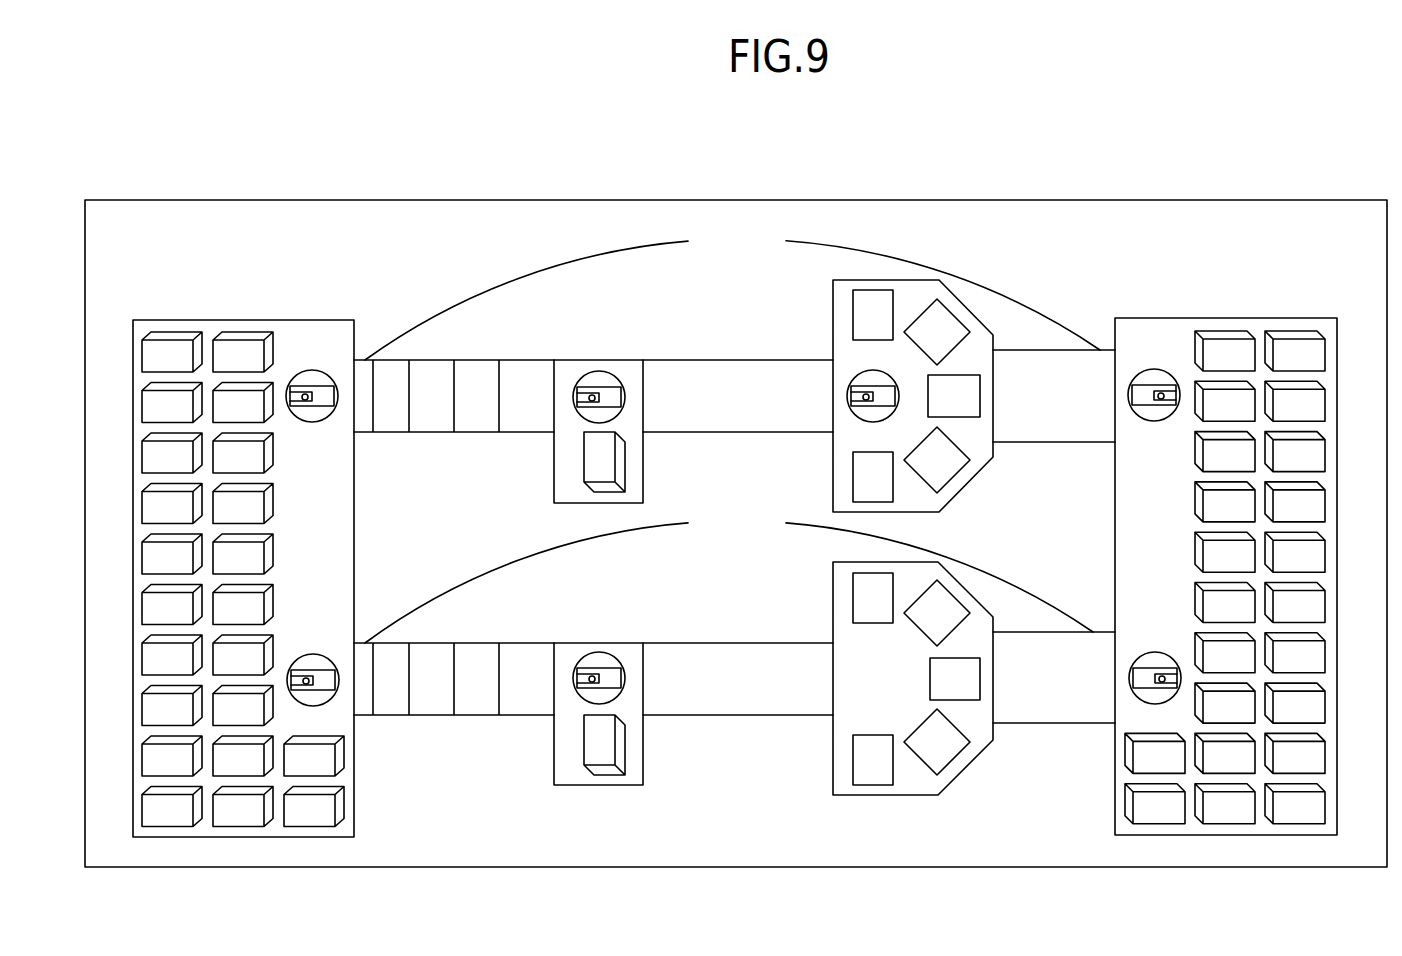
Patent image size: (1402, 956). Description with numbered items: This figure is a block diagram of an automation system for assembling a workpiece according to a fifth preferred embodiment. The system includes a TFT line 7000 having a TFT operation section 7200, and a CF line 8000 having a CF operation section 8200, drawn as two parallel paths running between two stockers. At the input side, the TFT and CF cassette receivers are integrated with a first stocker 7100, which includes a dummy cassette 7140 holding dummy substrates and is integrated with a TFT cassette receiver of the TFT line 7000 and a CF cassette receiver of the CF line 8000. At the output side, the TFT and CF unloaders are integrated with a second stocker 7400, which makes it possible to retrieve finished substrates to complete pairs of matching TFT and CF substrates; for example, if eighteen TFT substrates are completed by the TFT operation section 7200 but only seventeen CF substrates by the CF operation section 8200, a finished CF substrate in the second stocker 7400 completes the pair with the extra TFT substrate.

The TFT line 7000 is at (578, 253).
The first stocker 7100 is at (303, 530).
The dummy cassette 7140 is at (336, 756).
The TFT operation section 7200 is at (734, 368).
The second stocker 7400 is at (1235, 318).
The CF line 8000 is at (734, 673).
The CF operation section 8200 is at (503, 798).